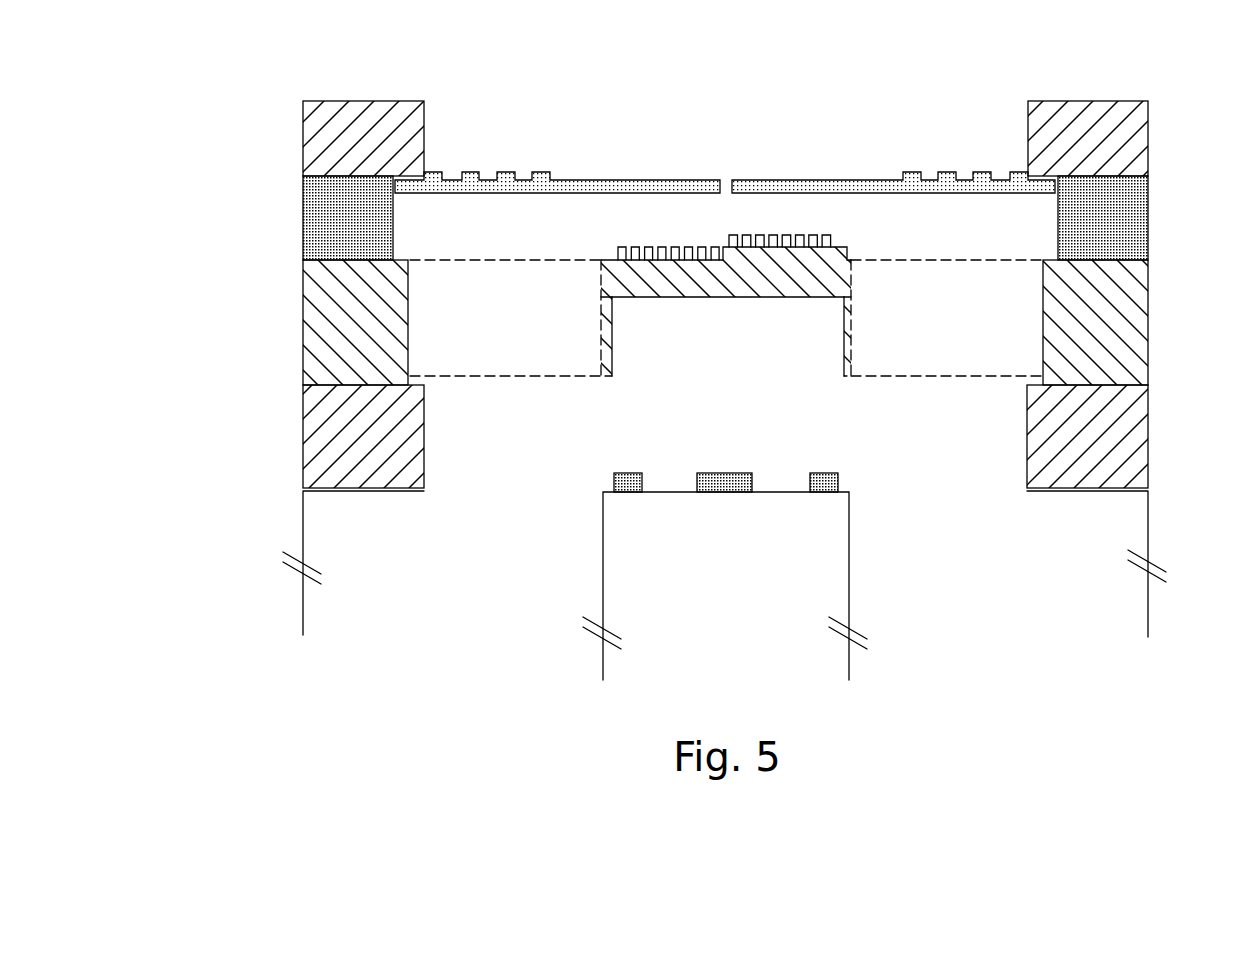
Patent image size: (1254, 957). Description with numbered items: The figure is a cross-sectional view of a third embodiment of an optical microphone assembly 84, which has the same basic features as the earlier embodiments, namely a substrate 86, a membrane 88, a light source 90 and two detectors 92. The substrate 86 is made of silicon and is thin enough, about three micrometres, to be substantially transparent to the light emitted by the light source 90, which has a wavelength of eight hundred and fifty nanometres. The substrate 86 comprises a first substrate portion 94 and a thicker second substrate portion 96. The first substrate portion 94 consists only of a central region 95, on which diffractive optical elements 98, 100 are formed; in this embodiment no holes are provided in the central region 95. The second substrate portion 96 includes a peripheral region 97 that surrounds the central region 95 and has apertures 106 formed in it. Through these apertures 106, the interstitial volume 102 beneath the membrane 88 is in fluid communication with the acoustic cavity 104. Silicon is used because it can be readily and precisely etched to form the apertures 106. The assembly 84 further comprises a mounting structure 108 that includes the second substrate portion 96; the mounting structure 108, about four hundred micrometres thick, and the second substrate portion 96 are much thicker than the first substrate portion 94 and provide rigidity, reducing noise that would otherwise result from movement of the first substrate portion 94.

The optical microphone assembly 84 is at (281, 90).
The substrate 86 is at (1179, 312).
The membrane 88 is at (613, 178).
The light source 90 is at (733, 483).
The detectors 92 is at (629, 492).
The first substrate portion 94 is at (767, 298).
The central region 95 is at (727, 283).
The second substrate portion 96 is at (613, 382).
The peripheral region 97 is at (457, 382).
The diffractive optical element 98 is at (658, 240).
The diffractive optical element 100 is at (818, 227).
The interstitial volume 102 is at (475, 238).
The acoustic cavity 104 is at (913, 495).
The apertures 106 is at (507, 357).
The mounting structure 108 is at (252, 103).